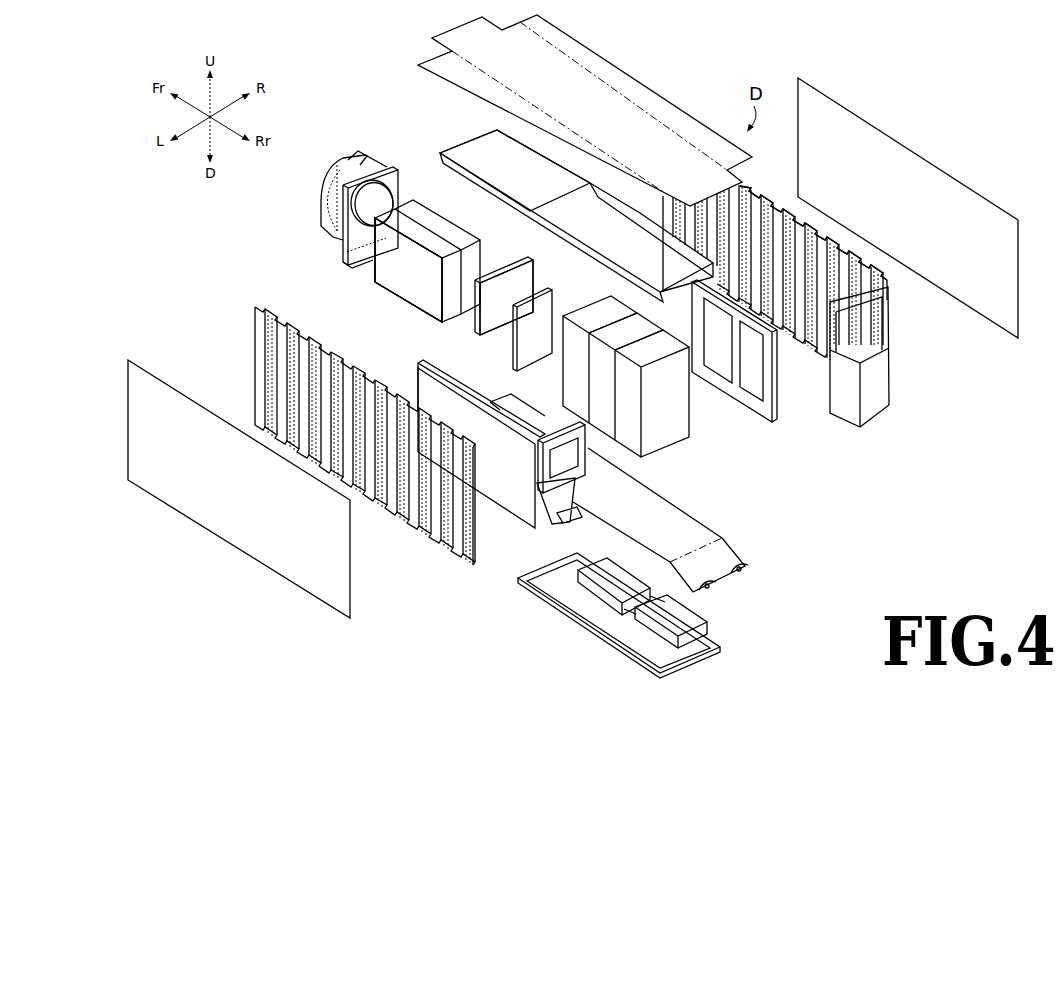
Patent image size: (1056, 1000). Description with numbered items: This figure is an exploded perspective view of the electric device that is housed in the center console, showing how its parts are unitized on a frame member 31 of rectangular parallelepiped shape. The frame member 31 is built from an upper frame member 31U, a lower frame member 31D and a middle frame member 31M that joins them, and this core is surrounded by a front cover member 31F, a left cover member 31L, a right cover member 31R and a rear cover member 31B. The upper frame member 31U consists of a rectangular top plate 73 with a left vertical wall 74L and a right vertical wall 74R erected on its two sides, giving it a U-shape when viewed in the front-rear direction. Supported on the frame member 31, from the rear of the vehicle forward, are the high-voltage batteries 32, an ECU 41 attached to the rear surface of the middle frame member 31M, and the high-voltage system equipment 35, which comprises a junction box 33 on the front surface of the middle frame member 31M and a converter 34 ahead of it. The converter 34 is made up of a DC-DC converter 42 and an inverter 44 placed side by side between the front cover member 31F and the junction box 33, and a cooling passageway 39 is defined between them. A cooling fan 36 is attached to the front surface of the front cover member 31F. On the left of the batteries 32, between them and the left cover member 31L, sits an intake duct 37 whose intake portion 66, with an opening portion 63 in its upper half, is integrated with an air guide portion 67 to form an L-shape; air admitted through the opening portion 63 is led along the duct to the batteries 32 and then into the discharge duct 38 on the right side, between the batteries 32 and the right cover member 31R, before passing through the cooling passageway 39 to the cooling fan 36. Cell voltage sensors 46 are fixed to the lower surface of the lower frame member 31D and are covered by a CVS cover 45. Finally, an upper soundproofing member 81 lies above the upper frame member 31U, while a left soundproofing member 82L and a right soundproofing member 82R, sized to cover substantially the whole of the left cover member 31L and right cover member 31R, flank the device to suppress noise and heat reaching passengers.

The frame member 31 is at (850, 250).
The front cover member 31F is at (384, 168).
The rear cover member 31B is at (883, 383).
The left cover member 31L is at (257, 372).
The right cover member 31R is at (798, 213).
The upper frame member 31U is at (643, 248).
The lower frame member 31D is at (720, 560).
The middle frame member 31M is at (522, 288).
The high-voltage batteries 32 is at (653, 393).
The junction box 33 is at (474, 298).
The converter (PCU) 34 is at (410, 268).
The high-voltage system equipment 35 is at (342, 291).
The cooling fan 36 is at (348, 160).
The intake duct 37 is at (506, 513).
The discharge duct 38 is at (778, 380).
The cooling passageway 39 is at (418, 215).
The ECU 41 is at (518, 364).
The DC-DC converter 42 is at (440, 222).
The inverter 44 is at (345, 250).
The CVS cover 45 is at (643, 648).
The cell voltage sensors (CVS) 46 is at (665, 622).
The opening portion 63 is at (565, 450).
The intake portion 66 is at (549, 514).
The air guide portion 67 is at (455, 373).
The top plate 73 is at (482, 152).
The left vertical wall 74L is at (497, 203).
The right vertical wall 74R is at (609, 220).
The upper soundproofing member 81 is at (612, 108).
The left soundproofing member 82L is at (262, 535).
The right soundproofing member 82R is at (930, 196).